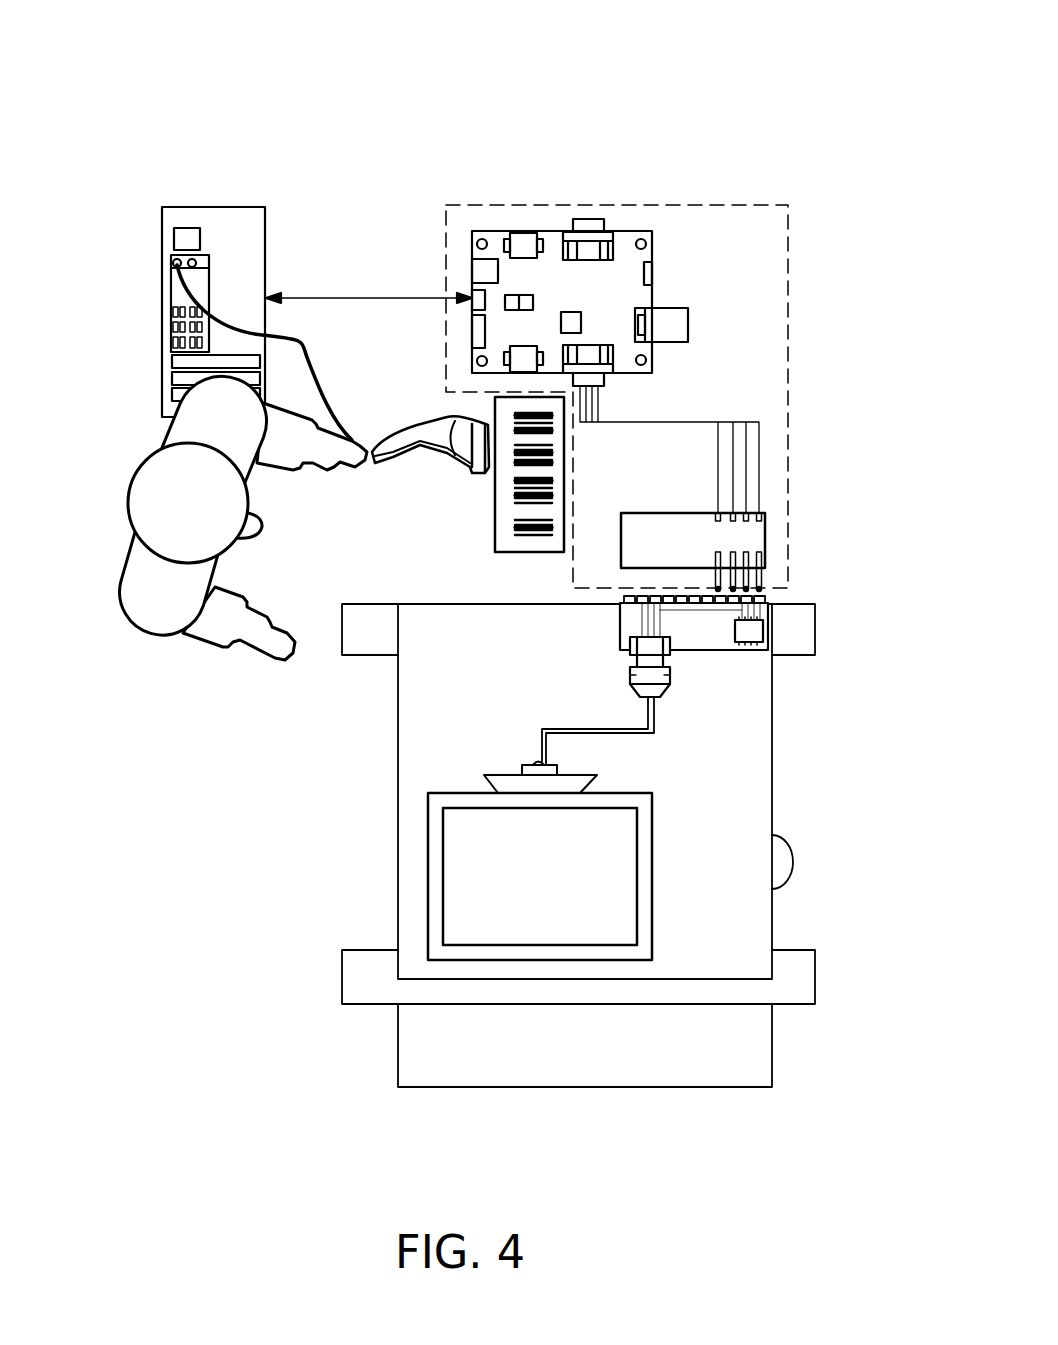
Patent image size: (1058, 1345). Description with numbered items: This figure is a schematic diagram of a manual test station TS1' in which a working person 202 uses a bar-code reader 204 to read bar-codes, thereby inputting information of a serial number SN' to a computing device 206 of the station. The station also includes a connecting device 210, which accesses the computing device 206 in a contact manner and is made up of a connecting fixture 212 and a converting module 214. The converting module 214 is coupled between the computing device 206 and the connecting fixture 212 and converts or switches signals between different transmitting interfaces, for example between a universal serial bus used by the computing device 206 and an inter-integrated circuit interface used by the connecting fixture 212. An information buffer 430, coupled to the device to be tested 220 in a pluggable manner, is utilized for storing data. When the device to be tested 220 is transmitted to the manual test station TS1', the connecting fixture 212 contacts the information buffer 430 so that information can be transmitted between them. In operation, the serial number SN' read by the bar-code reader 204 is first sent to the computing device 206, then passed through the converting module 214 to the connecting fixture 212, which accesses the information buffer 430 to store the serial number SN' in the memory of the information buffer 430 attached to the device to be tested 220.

The working person 202 is at (130, 485).
The bar-code reader 204 is at (413, 425).
The computing device 206 is at (162, 308).
The connecting device 210 is at (790, 339).
The connecting fixture 212 is at (766, 534).
The converting module 214 is at (655, 246).
The device to be tested 220 is at (447, 868).
The information buffer 430 is at (764, 632).
The serial number SN' is at (490, 474).
The manual test station TS1' is at (774, 57).